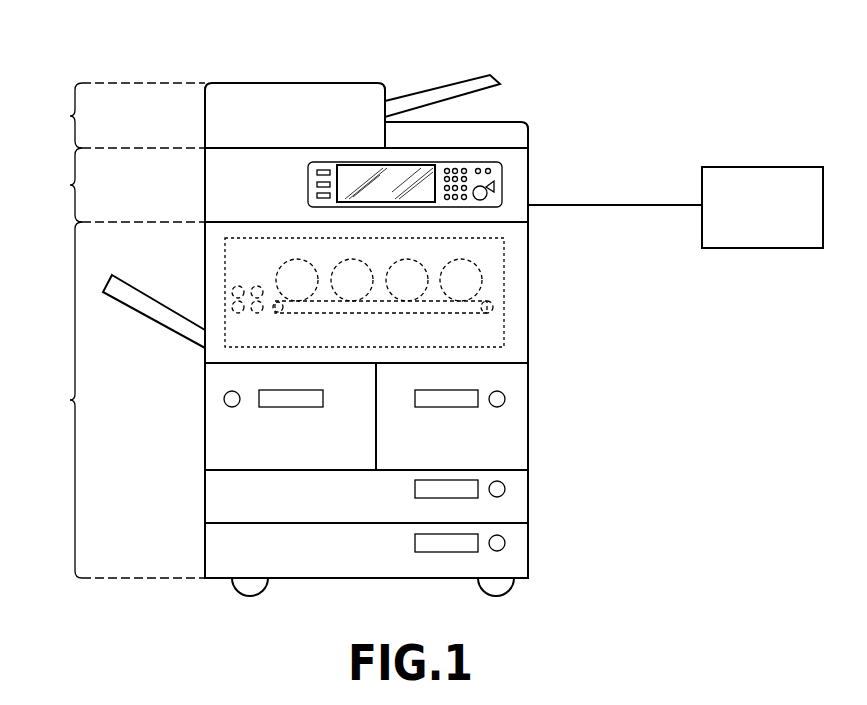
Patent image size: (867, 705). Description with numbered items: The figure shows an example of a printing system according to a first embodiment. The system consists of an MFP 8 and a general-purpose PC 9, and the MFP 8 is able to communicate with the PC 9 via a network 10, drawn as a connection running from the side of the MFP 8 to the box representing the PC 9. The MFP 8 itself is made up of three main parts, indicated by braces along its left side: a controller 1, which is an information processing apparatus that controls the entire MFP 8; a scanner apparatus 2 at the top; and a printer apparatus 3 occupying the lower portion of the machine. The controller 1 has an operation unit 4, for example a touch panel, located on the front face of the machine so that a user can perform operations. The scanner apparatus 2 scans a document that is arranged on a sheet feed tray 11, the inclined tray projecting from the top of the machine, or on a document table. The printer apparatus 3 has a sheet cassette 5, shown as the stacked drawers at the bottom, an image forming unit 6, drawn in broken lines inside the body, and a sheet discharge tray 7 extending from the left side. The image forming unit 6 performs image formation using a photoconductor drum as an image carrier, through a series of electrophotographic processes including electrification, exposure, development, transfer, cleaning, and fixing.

The controller 1 is at (70, 185).
The scanner apparatus 2 is at (70, 116).
The printer apparatus 3 is at (70, 400).
The operation unit 4 is at (497, 197).
The sheet cassette 5 is at (528, 405).
The image forming unit 6 is at (504, 281).
The sheet discharge tray 7 is at (172, 306).
The MFP 8 is at (536, 70).
The PC 9 is at (770, 167).
The network 10 is at (636, 205).
The sheet feed tray 11 is at (455, 84).